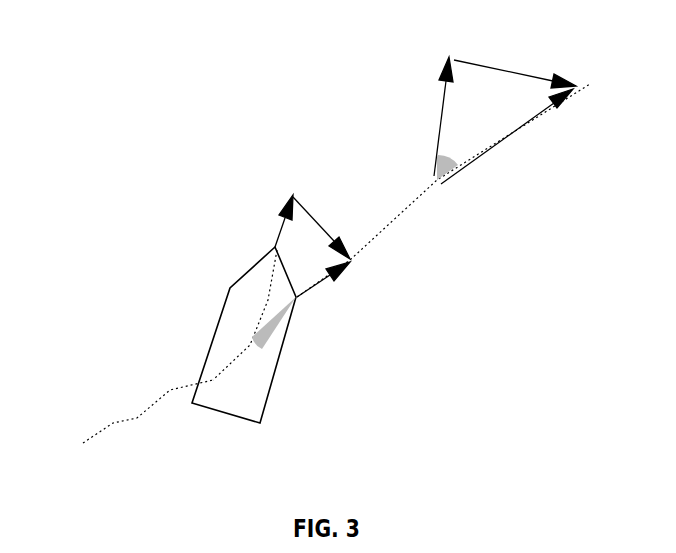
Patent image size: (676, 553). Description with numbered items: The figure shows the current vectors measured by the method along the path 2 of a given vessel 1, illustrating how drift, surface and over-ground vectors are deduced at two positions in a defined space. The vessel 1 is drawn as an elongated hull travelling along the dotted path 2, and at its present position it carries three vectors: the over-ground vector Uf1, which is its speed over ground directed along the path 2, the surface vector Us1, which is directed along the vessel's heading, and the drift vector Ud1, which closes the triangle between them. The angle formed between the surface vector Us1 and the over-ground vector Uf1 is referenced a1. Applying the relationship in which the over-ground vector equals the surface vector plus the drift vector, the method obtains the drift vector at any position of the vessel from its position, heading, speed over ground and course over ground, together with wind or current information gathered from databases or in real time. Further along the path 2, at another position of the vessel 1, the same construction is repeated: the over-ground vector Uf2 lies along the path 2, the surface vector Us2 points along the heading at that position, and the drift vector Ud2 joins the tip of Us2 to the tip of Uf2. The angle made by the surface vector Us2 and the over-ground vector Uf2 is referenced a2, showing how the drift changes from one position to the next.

The vessel 1 is at (230, 288).
The path 2 is at (135, 420).
The surface vector Us1 is at (260, 223).
The drift vector Ud1 is at (329, 228).
The over-ground vector Uf1 is at (325, 300).
The angle a1 is at (274, 323).
The surface vector Us2 is at (420, 116).
The drift vector Ud2 is at (515, 56).
The over-ground vector Uf2 is at (507, 136).
The angle a2 is at (452, 182).